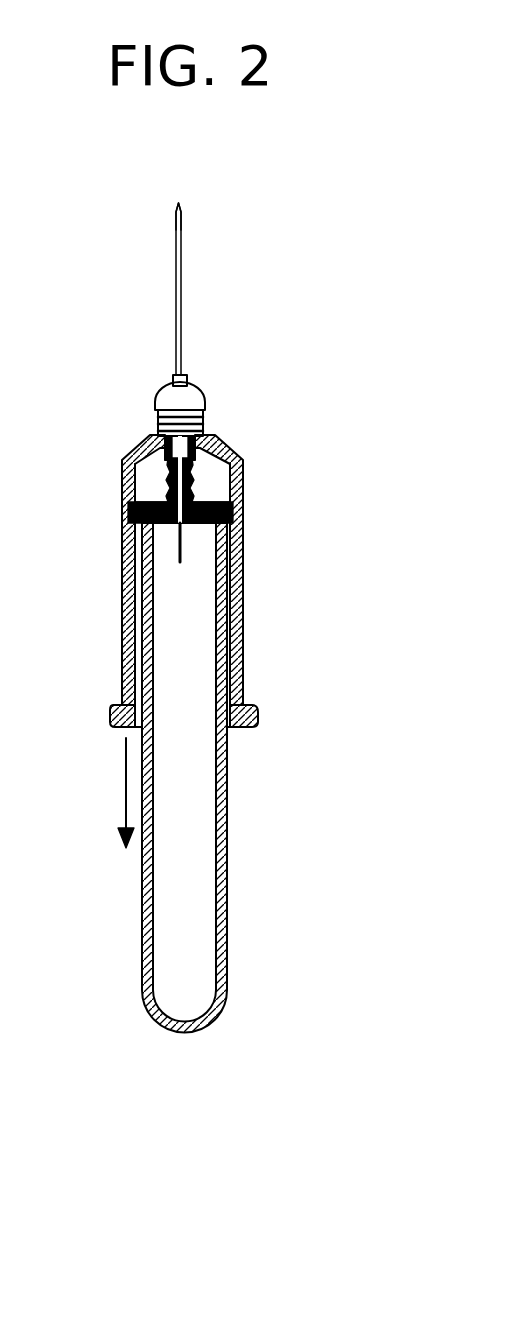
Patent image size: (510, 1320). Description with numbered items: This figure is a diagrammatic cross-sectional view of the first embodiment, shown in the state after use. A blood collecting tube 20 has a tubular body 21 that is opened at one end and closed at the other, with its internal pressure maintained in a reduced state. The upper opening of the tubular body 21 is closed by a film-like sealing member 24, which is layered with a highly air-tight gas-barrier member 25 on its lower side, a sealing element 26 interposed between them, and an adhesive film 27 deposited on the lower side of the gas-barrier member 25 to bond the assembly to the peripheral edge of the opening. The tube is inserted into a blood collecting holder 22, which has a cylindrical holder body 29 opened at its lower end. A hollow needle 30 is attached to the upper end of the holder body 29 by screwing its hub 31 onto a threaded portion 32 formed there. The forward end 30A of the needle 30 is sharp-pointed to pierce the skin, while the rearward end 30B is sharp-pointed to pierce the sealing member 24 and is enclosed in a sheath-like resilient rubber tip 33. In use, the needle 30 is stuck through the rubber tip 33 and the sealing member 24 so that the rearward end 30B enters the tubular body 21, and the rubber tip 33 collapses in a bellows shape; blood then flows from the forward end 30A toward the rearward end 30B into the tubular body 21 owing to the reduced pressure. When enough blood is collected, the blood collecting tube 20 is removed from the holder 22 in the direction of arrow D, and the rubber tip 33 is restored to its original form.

The blood collecting tube 20 is at (205, 609).
The tubular body 21 is at (239, 860).
The blood collecting holder 22 is at (253, 683).
The sealing member 24 is at (159, 492).
The gas-barrier member 25 is at (128, 518).
The sealing element 26 is at (238, 502).
The adhesive film 27 is at (233, 561).
The holder body 29 is at (125, 643).
The hollow needle 30 is at (181, 293).
The forward end 30A is at (179, 207).
The rearward end 30B is at (238, 618).
The hub 31 is at (194, 392).
The threaded portion 32 is at (204, 432).
The rubber tip 33 is at (195, 483).
The arrow D is at (126, 792).